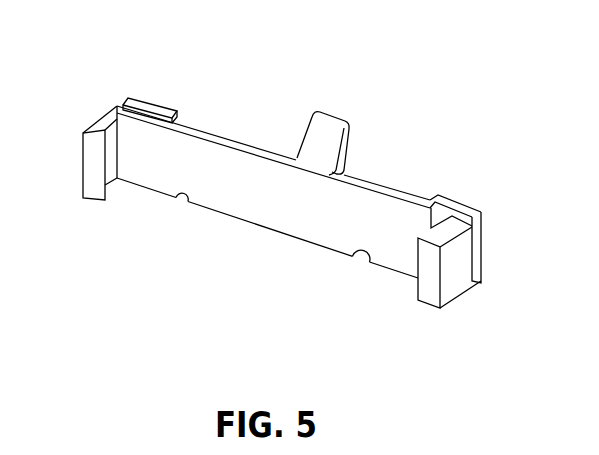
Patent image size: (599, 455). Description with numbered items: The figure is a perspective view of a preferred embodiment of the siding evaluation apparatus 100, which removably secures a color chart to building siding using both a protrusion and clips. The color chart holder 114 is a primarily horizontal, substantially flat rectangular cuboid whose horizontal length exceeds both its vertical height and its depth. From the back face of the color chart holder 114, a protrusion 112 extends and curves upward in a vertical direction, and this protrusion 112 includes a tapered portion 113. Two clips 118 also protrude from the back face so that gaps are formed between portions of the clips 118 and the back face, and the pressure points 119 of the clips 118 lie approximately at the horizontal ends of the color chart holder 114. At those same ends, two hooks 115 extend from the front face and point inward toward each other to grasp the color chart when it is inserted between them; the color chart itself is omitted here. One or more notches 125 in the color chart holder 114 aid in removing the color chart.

The bracket assembly 100 is at (483, 73).
The protrusion 112 is at (351, 153).
The tapered portion 113 is at (349, 127).
The color chart holder 114 is at (407, 195).
The hooks 115 is at (95, 199).
The clips 118 is at (152, 104).
The pressure points 119 is at (123, 104).
The notches 125 is at (182, 200).